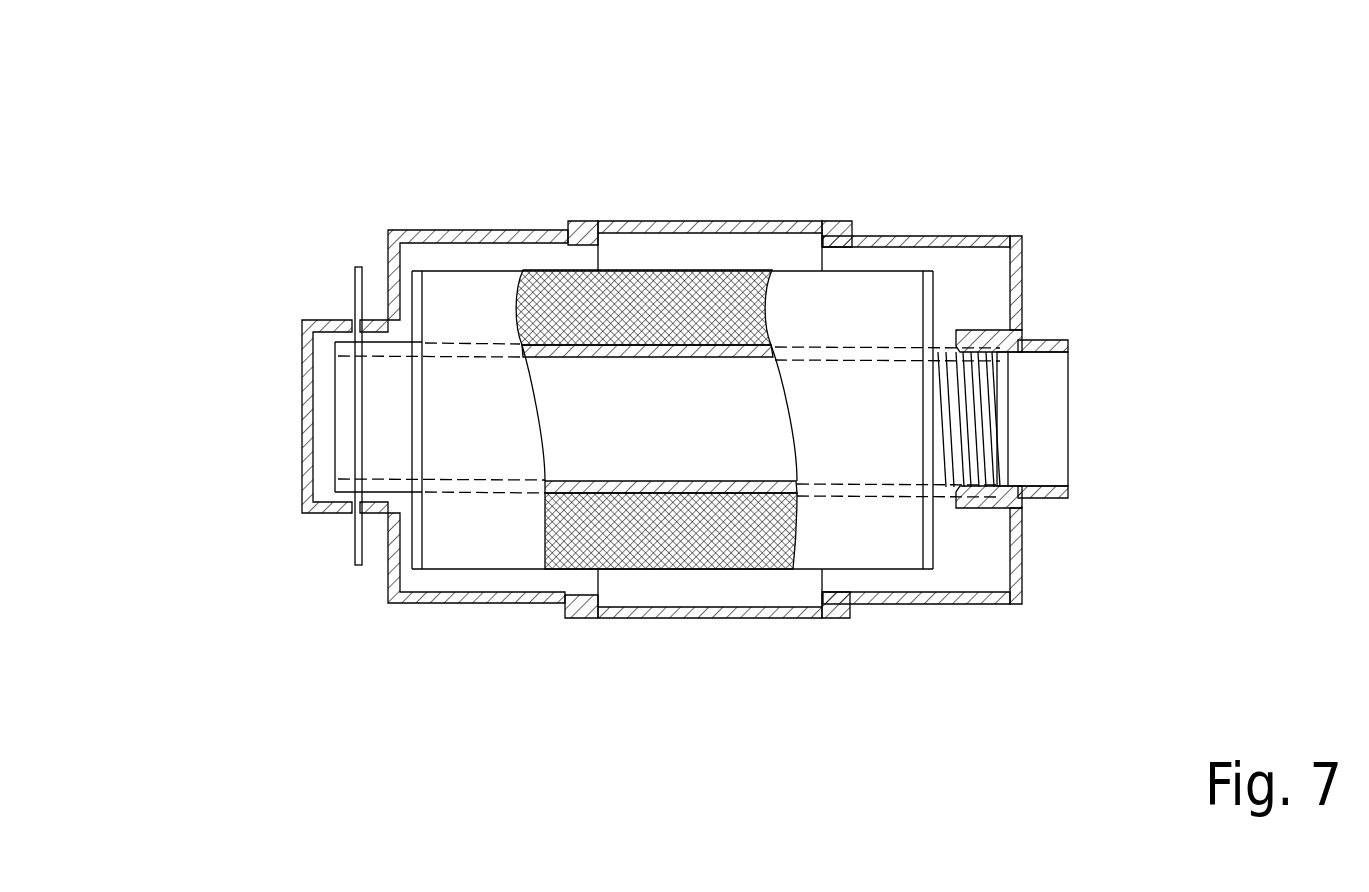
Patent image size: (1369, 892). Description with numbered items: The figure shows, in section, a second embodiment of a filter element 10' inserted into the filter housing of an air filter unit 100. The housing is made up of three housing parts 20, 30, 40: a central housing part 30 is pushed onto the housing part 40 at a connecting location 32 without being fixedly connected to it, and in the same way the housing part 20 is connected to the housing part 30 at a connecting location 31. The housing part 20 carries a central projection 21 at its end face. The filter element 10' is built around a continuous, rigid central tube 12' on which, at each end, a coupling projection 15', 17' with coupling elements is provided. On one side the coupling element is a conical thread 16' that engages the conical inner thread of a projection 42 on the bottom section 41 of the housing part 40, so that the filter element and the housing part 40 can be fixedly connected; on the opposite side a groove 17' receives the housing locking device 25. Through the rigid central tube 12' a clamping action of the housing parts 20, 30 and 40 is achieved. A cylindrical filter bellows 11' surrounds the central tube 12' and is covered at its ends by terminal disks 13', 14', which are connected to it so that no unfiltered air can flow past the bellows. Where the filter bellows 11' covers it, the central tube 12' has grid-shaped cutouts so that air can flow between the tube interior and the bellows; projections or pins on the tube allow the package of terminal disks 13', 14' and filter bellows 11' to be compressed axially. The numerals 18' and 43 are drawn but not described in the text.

The air filter unit 100 is at (186, 140).
The filter element 10' is at (659, 270).
The filter bellows 11' is at (648, 314).
The central tube 12' is at (659, 276).
The terminal disk 13' is at (649, 312).
The terminal disk 14' is at (965, 316).
The coupling projection 15' is at (1116, 419).
The conical thread 16' is at (1086, 419).
The groove 17' is at (556, 419).
The pipe bore 18' is at (556, 420).
The housing part 20 is at (428, 600).
The central projection 21 is at (306, 342).
The housing locking device 25 is at (357, 265).
The central housing part 30 is at (708, 612).
The connecting location 31 is at (573, 612).
The connecting location 32 is at (843, 615).
The housing part 40 is at (992, 603).
The bottom section 41 is at (1018, 252).
The projection 42 is at (982, 335).
The flange 43 is at (1047, 346).